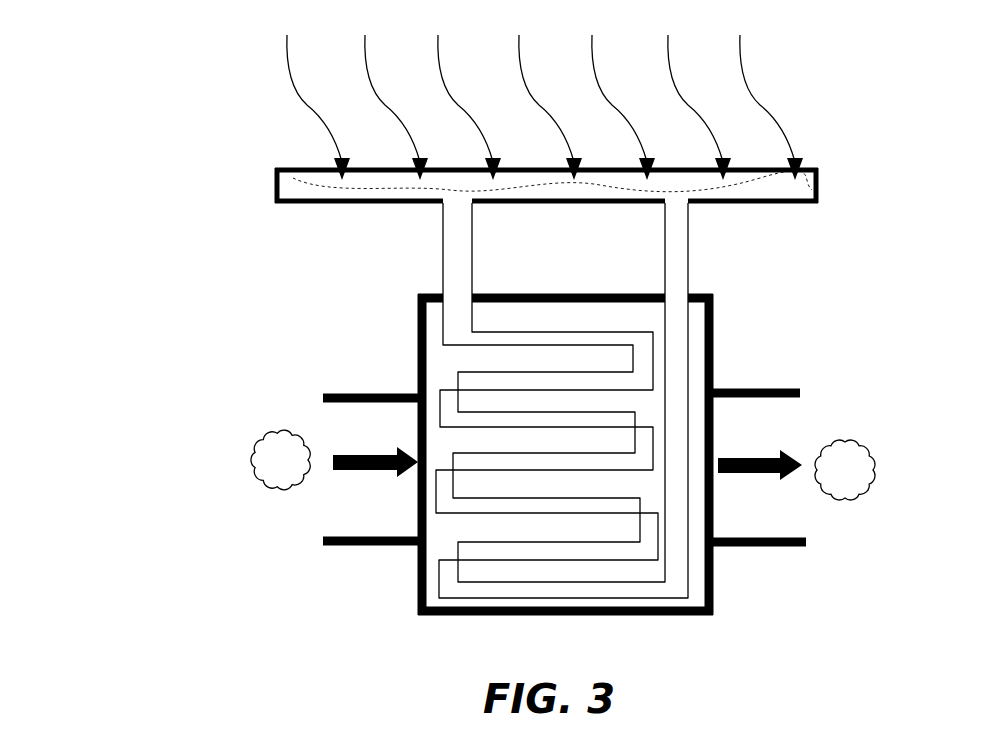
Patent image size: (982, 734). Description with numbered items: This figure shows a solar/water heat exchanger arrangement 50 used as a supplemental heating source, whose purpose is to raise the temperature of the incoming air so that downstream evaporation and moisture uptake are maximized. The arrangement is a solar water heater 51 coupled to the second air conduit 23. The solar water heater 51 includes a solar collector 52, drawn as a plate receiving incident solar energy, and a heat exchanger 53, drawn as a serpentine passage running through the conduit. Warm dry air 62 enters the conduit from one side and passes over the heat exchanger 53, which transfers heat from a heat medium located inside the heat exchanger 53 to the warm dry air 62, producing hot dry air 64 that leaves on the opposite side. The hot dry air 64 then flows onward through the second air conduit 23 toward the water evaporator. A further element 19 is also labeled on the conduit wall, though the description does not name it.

The heat recovery system 50 is at (175, 93).
The solar water heater 51 is at (702, 89).
The solar collector 52 is at (275, 187).
The heat exchanger 53 is at (443, 330).
The second air conduit 23 is at (722, 390).
The gas passage duct 19 is at (378, 547).
The warm dry air 62 is at (277, 455).
The hot dry air 64 is at (855, 497).